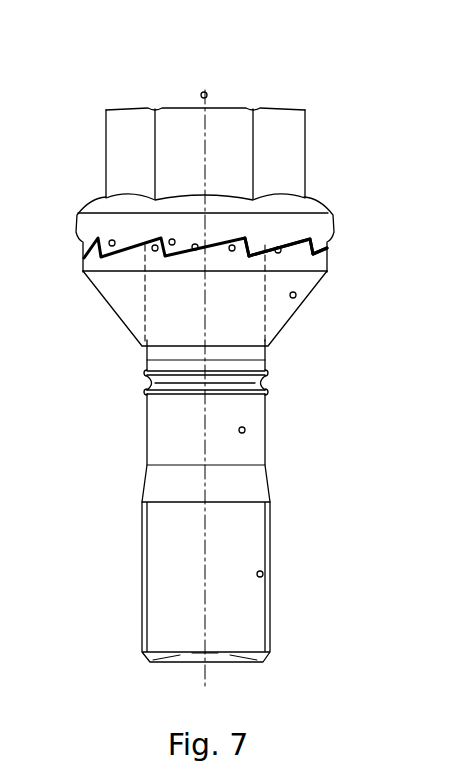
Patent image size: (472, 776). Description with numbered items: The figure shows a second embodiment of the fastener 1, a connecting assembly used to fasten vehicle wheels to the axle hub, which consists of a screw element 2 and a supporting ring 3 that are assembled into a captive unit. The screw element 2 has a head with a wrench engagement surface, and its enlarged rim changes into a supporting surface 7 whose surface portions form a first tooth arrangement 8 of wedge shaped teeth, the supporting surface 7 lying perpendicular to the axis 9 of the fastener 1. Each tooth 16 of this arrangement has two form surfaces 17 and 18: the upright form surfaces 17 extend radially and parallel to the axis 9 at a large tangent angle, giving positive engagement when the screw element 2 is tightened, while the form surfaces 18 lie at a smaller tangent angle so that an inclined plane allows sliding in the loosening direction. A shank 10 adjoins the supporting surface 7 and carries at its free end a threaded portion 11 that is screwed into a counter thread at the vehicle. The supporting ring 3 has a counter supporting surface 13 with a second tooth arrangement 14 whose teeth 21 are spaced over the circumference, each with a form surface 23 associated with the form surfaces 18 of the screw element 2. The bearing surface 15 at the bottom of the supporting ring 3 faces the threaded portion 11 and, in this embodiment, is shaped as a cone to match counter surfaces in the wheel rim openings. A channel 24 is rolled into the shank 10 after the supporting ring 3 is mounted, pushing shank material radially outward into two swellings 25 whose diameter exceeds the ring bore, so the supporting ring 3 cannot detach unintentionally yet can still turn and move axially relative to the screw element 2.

The fastener 1 is at (271, 75).
The screw element 2 is at (237, 102).
The supporting ring 3 is at (80, 266).
The supporting surface 7 is at (292, 237).
The first tooth arrangement 8 is at (319, 234).
The axis 9 is at (202, 92).
The shank 10 is at (245, 431).
The threaded portion 11 is at (263, 573).
The counter supporting surface 13 is at (302, 245).
The second tooth arrangement 14 is at (320, 251).
The bearing surface 15 is at (296, 297).
The tooth 16 is at (169, 240).
The form surface 17 is at (249, 245).
The form surface 18 is at (194, 244).
The tooth 21 is at (229, 250).
The form surface 23 is at (281, 252).
The channel 24 is at (266, 382).
The swellings 25 is at (143, 392).